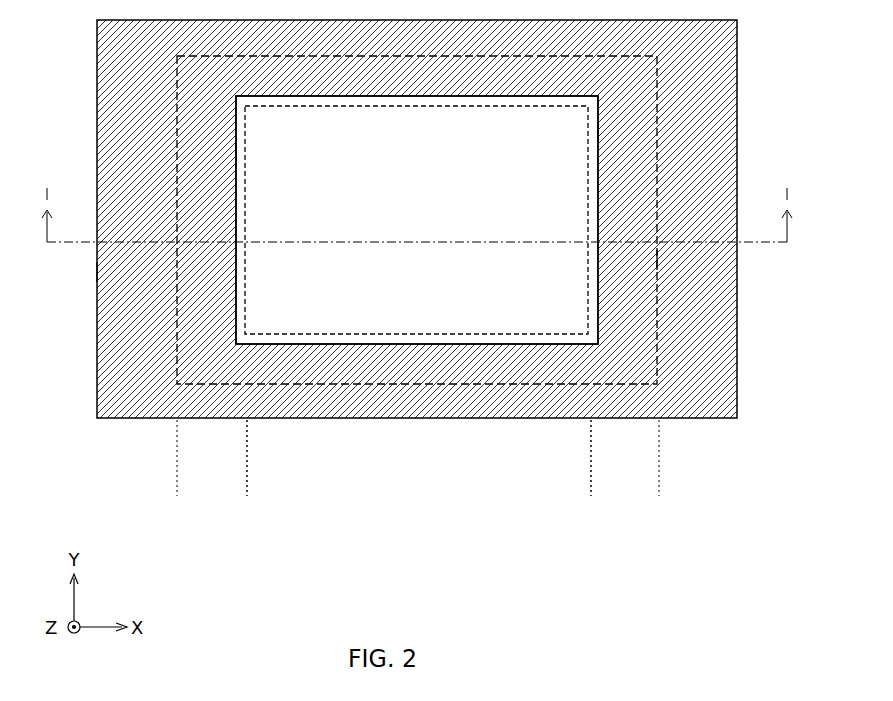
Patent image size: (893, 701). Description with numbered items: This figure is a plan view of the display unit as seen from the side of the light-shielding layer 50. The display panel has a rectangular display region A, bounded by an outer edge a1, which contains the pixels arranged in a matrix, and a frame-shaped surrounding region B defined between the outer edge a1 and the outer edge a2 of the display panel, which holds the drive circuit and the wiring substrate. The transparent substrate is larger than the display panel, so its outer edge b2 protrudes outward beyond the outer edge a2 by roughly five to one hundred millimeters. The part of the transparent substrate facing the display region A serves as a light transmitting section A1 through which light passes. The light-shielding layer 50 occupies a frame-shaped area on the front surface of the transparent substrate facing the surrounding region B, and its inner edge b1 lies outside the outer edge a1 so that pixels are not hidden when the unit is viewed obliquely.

The light-shielding layer 50 is at (417, 306).
The light transmitting section A1 is at (431, 368).
The outer edge of the display region a1 is at (600, 132).
The outer edge of the display panel a2 is at (673, 260).
The inner edge of the light-shielding layer b1 is at (235, 149).
The outer edge of the transparent substrate b2 is at (99, 273).
The display region A is at (247, 496).
The surrounding region B is at (177, 496).